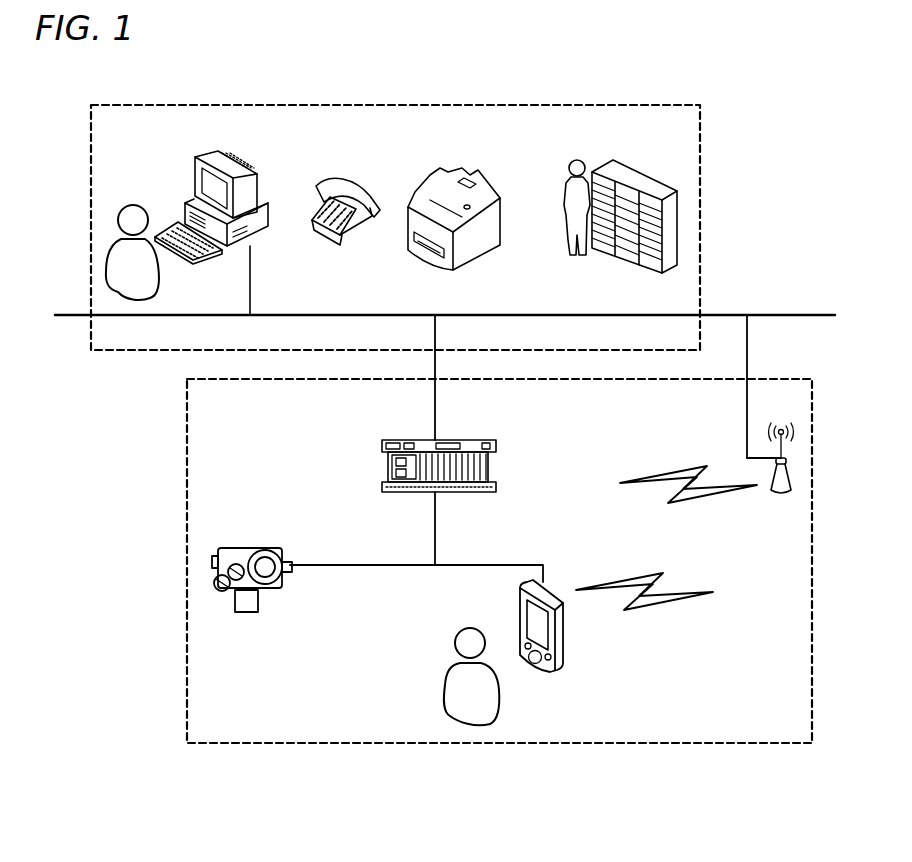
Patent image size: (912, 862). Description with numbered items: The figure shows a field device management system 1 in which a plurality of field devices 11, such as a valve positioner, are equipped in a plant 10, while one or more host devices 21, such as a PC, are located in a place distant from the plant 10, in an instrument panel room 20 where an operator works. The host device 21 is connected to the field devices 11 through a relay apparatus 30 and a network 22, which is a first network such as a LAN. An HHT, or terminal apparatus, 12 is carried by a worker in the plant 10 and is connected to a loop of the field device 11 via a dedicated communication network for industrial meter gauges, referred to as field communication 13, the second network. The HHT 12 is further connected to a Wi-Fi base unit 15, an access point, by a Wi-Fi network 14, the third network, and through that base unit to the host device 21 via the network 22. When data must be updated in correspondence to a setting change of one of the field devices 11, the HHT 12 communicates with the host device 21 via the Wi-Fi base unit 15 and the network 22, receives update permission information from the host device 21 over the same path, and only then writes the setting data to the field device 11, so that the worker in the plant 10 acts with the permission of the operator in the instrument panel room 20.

The field device management system 1 is at (484, 762).
The plant 10 is at (187, 465).
The field device 11 is at (284, 583).
The HHT (terminal apparatus) 12 is at (570, 640).
The field communication 13 is at (363, 565).
The Wi-Fi network 14 is at (670, 540).
The Wi-Fi base unit 15 is at (782, 495).
The instrument panel room 20 is at (90, 198).
The host device 21 is at (240, 170).
The network 22 is at (500, 315).
The relay apparatus 30 is at (495, 465).